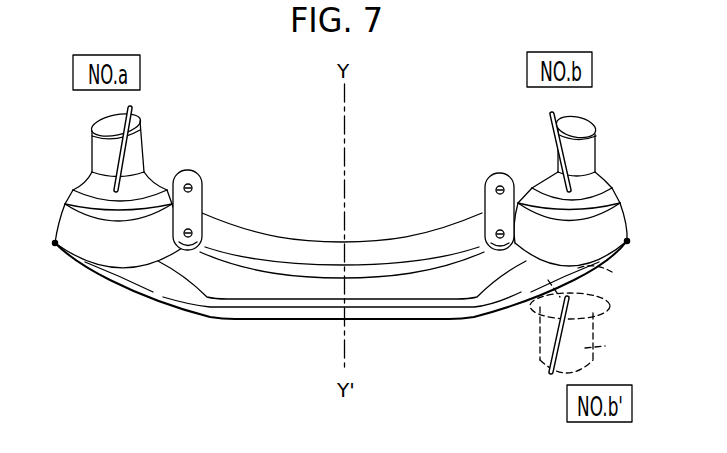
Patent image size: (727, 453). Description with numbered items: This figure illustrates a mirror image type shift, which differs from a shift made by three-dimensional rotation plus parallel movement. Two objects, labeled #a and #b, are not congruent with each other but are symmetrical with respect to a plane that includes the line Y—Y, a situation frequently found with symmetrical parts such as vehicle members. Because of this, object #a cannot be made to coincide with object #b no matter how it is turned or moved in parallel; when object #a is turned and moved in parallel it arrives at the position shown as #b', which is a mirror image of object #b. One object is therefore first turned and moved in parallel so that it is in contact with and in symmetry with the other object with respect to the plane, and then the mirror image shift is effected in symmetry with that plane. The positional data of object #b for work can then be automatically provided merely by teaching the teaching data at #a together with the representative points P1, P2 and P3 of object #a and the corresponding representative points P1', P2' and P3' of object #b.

The representative point P1 is at (160, 143).
The representative point P2 is at (52, 276).
The representative point P3 is at (217, 203).
The representative point P1' is at (531, 139).
The representative point P2' is at (647, 273).
The representative point P3' is at (470, 203).